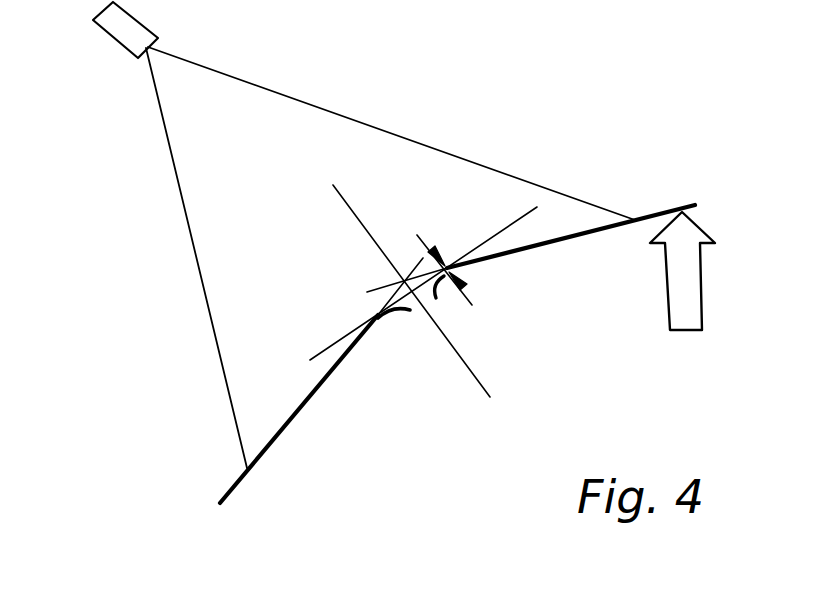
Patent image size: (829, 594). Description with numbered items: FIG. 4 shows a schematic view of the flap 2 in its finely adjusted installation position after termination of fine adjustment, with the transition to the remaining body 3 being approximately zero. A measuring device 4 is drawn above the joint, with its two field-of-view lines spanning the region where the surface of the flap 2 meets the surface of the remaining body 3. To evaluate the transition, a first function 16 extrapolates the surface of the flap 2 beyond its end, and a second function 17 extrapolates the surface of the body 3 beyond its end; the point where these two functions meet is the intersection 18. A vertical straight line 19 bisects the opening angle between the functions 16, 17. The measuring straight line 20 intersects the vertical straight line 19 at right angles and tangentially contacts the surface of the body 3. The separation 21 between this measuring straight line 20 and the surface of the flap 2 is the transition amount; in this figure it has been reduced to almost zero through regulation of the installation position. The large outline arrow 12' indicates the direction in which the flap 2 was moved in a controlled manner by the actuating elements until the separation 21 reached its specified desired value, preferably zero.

The optical sensor 4 is at (122, 37).
The flap 2 is at (595, 278).
The remaining body 3 is at (353, 427).
The vertical straight line 19 is at (338, 195).
The measuring straight line 20 is at (515, 222).
The second function 17 is at (421, 259).
The first function 16 is at (380, 286).
The intersection 18 is at (362, 309).
The separation 21 is at (458, 277).
The arrow 12' is at (714, 271).